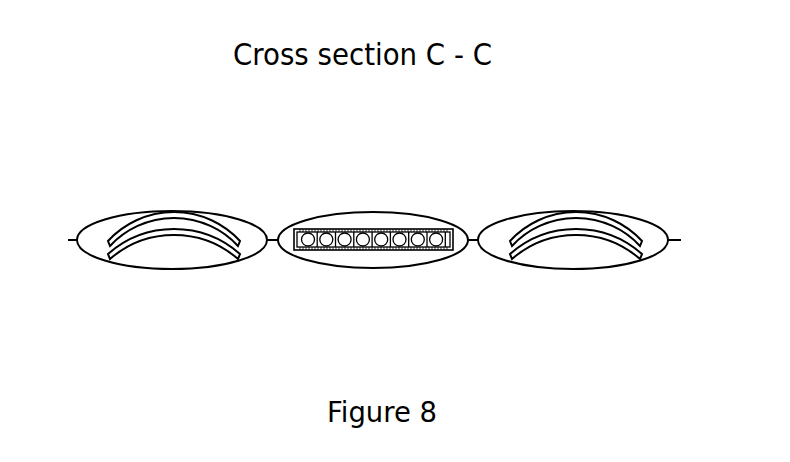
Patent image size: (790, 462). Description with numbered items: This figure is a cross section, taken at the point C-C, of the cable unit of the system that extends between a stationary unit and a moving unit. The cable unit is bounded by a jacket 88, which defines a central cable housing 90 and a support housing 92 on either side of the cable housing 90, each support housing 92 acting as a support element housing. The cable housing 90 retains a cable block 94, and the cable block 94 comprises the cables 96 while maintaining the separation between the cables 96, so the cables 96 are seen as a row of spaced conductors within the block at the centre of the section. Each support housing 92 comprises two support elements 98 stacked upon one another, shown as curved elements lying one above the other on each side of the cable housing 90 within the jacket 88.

The jacket 88 is at (128, 213).
The cable housing 90 is at (370, 217).
The support housing 92 is at (360, 216).
The cable block 94 is at (455, 253).
The cables 96 is at (307, 232).
The support elements 98 is at (217, 233).